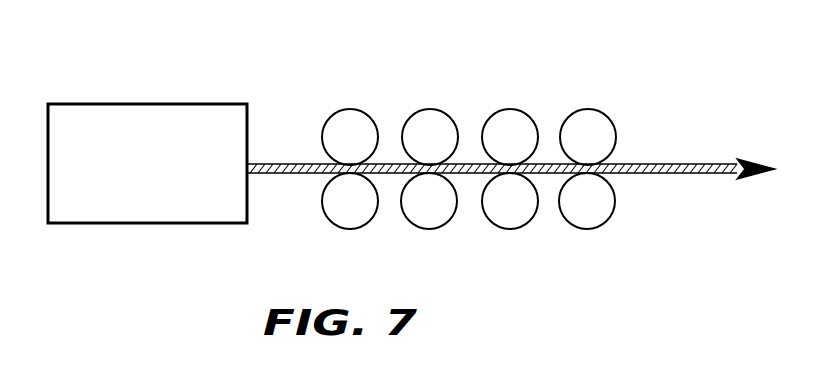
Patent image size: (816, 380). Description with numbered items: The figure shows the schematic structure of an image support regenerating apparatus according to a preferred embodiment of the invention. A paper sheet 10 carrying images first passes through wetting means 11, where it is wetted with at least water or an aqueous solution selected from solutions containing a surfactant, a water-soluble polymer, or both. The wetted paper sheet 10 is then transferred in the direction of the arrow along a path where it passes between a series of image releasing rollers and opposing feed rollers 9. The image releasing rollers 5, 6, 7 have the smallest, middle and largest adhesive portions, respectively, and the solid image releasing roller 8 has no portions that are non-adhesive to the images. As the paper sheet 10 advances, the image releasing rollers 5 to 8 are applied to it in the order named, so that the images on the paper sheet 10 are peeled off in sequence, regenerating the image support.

The image releasing roller 5 is at (347, 108).
The image releasing roller 6 is at (426, 108).
The image releasing roller 7 is at (507, 108).
The solid image releasing roller 8 is at (587, 108).
The feed rollers 9 is at (352, 231).
The paper sheet 10 is at (694, 162).
The wetting means 11 is at (98, 103).